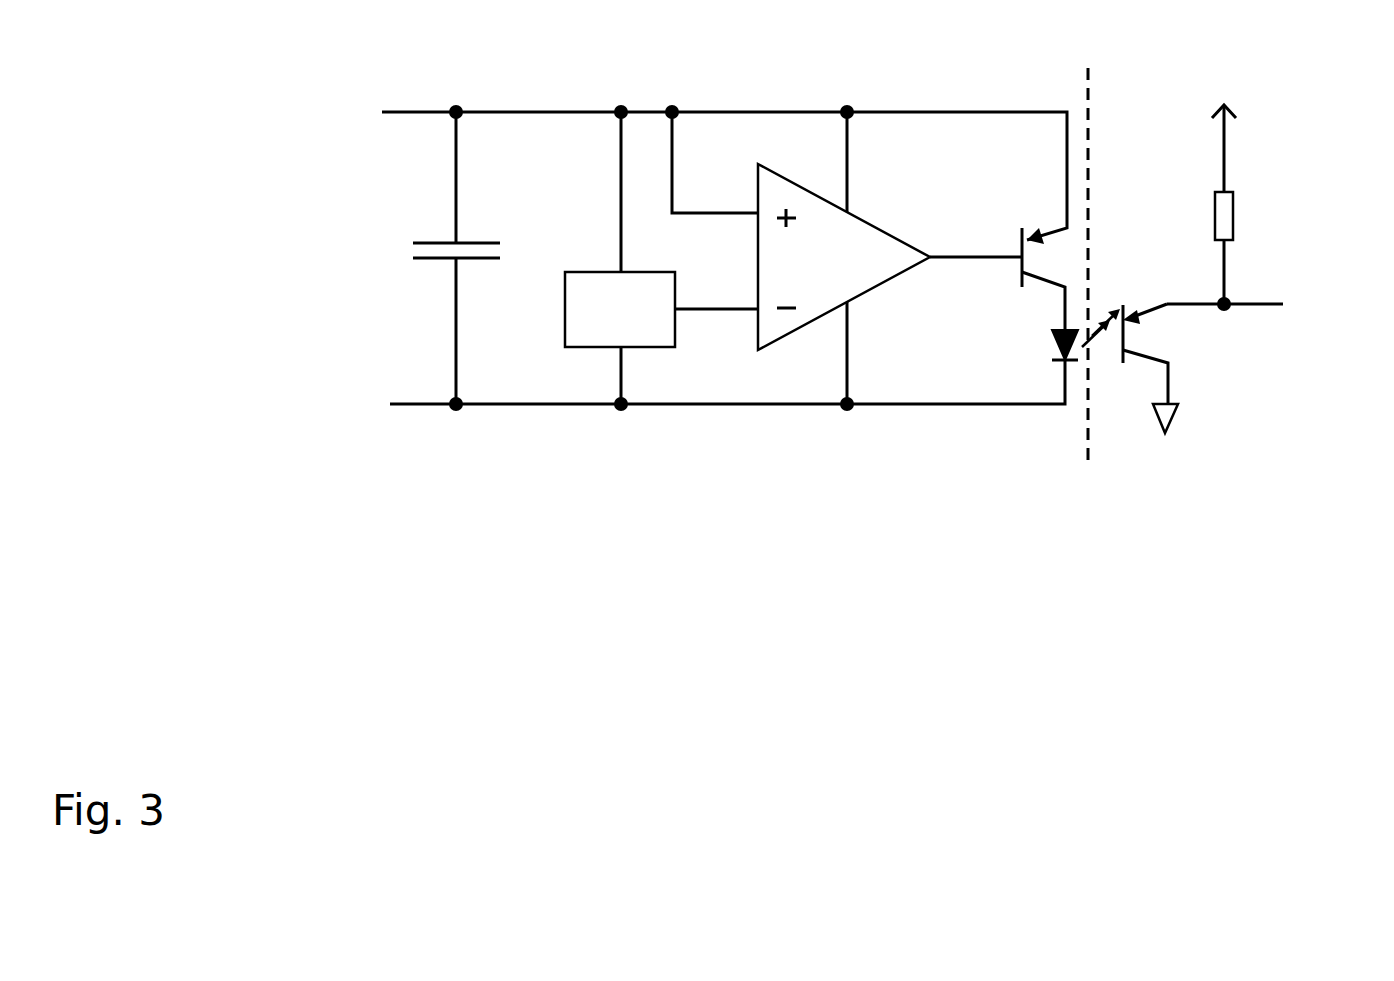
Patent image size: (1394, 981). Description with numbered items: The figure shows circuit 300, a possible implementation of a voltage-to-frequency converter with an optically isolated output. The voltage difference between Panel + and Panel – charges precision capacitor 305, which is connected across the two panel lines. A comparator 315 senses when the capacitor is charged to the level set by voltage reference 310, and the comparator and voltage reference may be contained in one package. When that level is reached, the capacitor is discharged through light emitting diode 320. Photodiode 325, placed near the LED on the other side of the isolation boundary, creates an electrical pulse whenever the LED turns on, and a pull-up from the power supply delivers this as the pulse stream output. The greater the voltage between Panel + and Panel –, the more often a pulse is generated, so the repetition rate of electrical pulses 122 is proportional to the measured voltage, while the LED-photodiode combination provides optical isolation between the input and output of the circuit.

The circuit 300 is at (486, 513).
The precision capacitor 305 is at (427, 272).
The voltage reference 310 is at (593, 264).
The comparator 315 is at (844, 257).
The light emitting diode 320 is at (1037, 355).
The photodiode 325 is at (1142, 296).
The pulse output 122 is at (1255, 315).